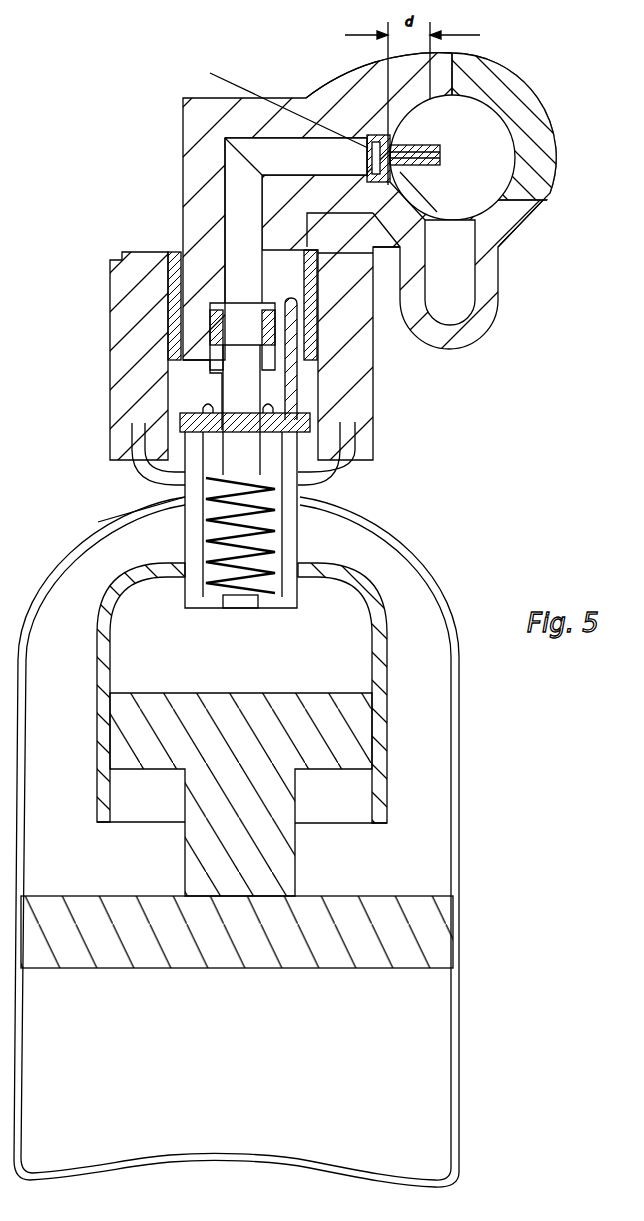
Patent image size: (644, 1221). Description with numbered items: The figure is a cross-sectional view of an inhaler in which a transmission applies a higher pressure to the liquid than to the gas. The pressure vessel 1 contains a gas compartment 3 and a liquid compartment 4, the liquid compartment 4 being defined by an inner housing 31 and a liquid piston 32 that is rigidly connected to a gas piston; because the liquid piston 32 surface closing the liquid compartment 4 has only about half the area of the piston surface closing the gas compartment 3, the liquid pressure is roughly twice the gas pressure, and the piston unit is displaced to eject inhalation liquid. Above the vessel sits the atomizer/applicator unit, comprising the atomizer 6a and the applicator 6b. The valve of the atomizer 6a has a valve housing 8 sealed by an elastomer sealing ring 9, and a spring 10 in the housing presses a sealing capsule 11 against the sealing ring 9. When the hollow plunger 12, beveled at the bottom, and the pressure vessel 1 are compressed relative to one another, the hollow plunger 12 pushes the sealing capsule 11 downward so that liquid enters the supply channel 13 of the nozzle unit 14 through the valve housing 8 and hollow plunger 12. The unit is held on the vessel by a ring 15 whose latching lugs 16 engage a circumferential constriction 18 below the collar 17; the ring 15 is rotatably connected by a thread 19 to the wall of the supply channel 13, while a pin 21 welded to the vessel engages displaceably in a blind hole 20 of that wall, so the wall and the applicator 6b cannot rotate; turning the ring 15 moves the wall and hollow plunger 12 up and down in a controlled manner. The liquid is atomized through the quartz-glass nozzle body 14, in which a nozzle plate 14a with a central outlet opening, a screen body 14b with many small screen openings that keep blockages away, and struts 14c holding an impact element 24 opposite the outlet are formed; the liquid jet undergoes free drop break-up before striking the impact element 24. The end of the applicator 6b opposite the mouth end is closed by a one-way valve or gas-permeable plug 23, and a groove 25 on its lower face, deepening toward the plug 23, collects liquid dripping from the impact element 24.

The pressure vessel 1 is at (420, 555).
The gas compartment 3 is at (74, 1033).
The liquid compartment 4 is at (172, 658).
The atomizer 6a is at (180, 105).
The applicator 6b is at (540, 187).
The valve housing 8 is at (187, 602).
The sealing ring 9 is at (262, 424).
The spring 10 is at (300, 550).
The sealing capsule 11 is at (184, 507).
The hollow plunger 12 is at (262, 345).
The supply channel 13 is at (252, 299).
The nozzle body 14 is at (372, 130).
The nozzle plate 14a is at (394, 180).
The screen body 14b is at (279, 102).
The struts 14c is at (440, 183).
The ring 15 is at (120, 257).
The latching lugs 16 is at (337, 478).
The collar 17 is at (150, 420).
The circumferential constriction 18 is at (98, 522).
The thread 19 is at (172, 345).
The blind hole 20 is at (292, 320).
The pin 21 is at (310, 358).
The gas-permeable plug 23 is at (442, 173).
The impact element 24 is at (440, 150).
The groove 25 is at (463, 272).
The inner housing 31 is at (350, 588).
The liquid piston 32 is at (233, 715).